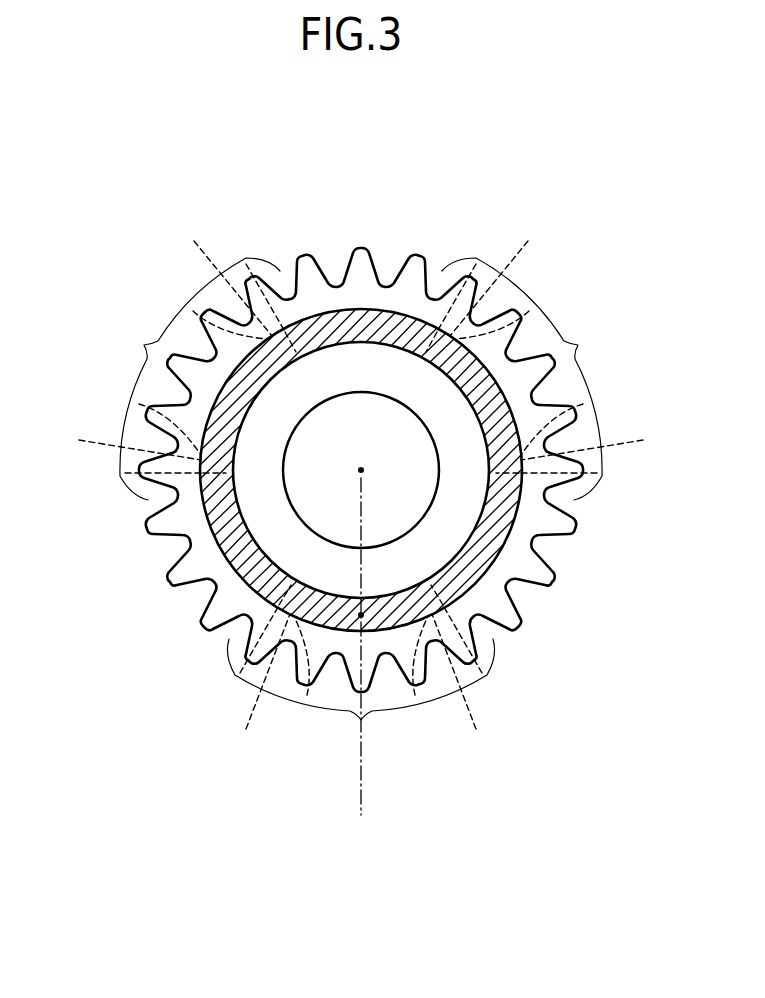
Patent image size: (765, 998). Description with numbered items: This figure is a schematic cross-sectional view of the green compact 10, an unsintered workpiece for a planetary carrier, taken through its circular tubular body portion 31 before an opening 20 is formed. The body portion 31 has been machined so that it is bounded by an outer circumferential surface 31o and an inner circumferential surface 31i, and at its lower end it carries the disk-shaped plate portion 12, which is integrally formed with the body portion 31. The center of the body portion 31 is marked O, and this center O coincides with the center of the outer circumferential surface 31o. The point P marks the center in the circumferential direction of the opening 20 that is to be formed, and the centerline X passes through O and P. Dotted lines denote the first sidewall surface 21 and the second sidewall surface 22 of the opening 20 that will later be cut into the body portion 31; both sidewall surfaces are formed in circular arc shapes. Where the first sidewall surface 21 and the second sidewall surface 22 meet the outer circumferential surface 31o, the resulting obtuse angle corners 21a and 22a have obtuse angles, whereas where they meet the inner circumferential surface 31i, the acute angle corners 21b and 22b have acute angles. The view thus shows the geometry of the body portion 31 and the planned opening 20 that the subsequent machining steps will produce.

The green compact 10 is at (348, 237).
The plate portion 12 is at (500, 580).
The opening 20 is at (359, 507).
The first sidewall surface 21 is at (295, 487).
The obtuse angle corner 21a is at (476, 264).
The acute angle corner 21b is at (529, 311).
The second sidewall surface 22 is at (418, 488).
The obtuse angle corner 22a is at (246, 264).
The acute angle corner 22b is at (193, 311).
The body portion 31 is at (515, 534).
The inner circumferential surface 31i is at (245, 514).
The outer circumferential surface 31o is at (230, 561).
The center of the body portion O is at (348, 470).
The center in the circumferential direction of the opening P is at (359, 618).
The centerline X is at (362, 662).